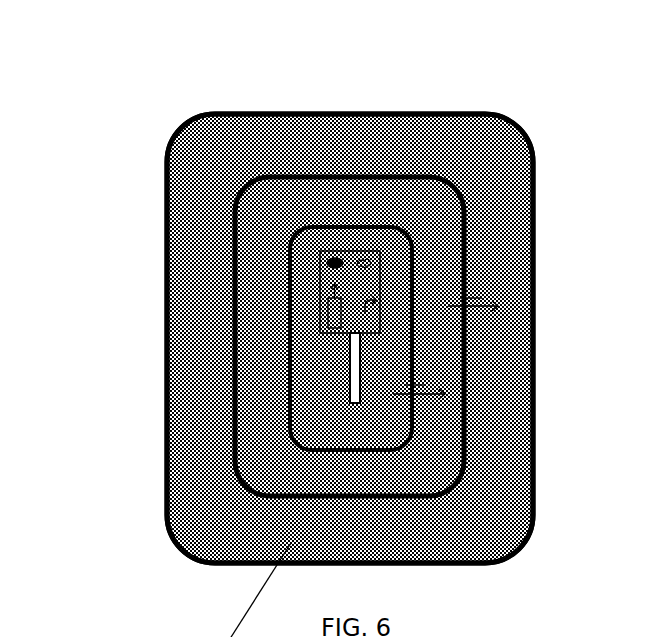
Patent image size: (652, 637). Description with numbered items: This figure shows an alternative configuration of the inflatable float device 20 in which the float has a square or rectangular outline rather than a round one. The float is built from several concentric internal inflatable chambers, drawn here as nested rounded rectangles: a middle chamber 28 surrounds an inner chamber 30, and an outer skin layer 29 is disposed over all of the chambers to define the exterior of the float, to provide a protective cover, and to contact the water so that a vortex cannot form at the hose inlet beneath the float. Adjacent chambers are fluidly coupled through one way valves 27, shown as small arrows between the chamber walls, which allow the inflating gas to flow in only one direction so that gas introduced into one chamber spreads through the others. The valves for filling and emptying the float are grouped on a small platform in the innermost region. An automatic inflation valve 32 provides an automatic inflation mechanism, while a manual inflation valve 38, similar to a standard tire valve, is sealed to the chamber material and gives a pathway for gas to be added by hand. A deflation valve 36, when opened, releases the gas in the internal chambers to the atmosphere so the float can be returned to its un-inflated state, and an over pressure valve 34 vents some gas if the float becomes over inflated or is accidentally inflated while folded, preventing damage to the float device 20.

The float device 20 is at (150, 138).
The one way valves 27 is at (448, 310).
The middle chamber 28 is at (282, 467).
The outer skin layer 29 is at (517, 534).
The inner chamber 30 is at (313, 373).
The automatic inflation valve 32 is at (313, 300).
The over pressure valve 34 is at (329, 250).
The deflation valve 36 is at (360, 248).
The manual inflation valve 38 is at (375, 310).